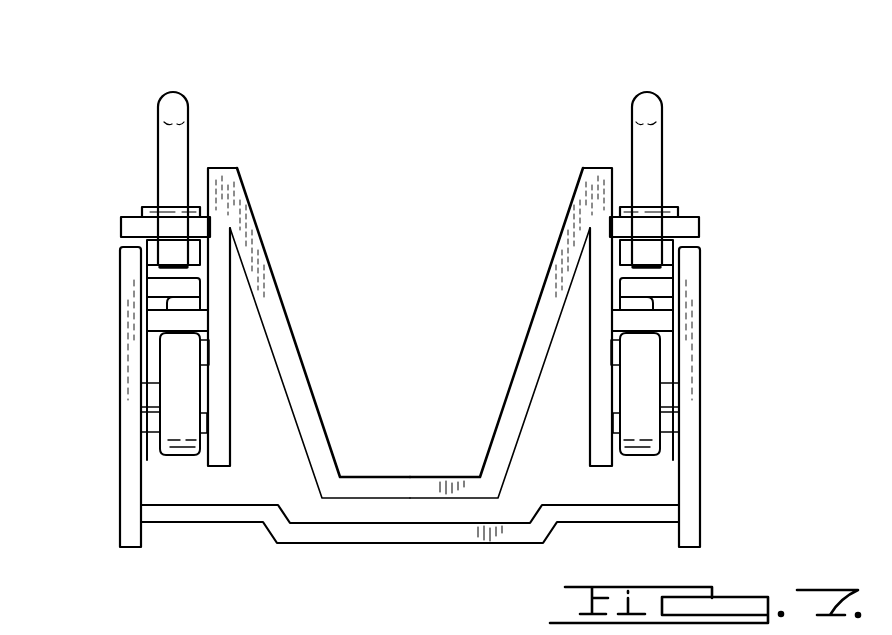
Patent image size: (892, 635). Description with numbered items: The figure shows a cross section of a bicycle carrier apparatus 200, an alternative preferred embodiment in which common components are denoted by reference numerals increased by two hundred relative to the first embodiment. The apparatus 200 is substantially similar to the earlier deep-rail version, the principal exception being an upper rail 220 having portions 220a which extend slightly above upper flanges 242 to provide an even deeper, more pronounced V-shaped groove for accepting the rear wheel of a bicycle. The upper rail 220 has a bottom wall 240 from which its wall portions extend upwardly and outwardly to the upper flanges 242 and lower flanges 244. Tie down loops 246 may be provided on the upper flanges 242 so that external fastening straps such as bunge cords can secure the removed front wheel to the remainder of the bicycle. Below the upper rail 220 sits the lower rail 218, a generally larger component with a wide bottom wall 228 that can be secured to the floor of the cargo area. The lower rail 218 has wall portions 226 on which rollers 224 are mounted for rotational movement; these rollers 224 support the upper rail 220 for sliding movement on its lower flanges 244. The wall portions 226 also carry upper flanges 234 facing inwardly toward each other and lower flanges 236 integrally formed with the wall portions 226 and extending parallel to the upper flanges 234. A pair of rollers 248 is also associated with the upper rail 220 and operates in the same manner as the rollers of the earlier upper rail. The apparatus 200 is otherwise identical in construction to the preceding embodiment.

The apparatus 200 is at (105, 137).
The lower rail 218 is at (253, 532).
The upper rail 220 is at (270, 234).
The portions of the upper rail 220a is at (232, 170).
The rollers 224 is at (170, 368).
The wall portions 226 is at (130, 477).
The bottom wall 228 is at (358, 538).
The upper flanges 234 is at (157, 288).
The lower flanges 236 is at (152, 420).
The bottom wall 240 is at (387, 476).
The upper flanges 242 is at (120, 208).
The lower flanges 244 is at (172, 322).
The tie down loops 246 is at (178, 98).
The rollers 248 is at (168, 303).